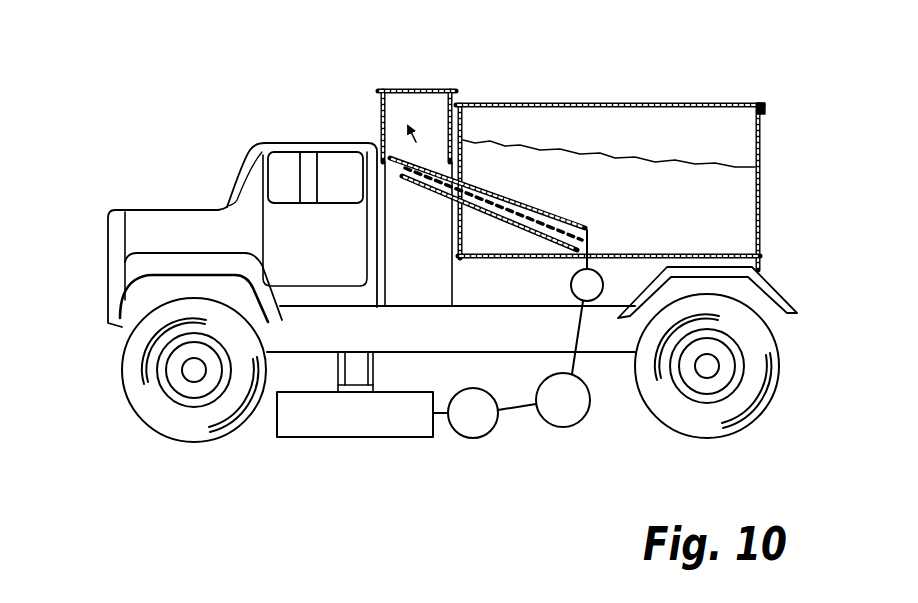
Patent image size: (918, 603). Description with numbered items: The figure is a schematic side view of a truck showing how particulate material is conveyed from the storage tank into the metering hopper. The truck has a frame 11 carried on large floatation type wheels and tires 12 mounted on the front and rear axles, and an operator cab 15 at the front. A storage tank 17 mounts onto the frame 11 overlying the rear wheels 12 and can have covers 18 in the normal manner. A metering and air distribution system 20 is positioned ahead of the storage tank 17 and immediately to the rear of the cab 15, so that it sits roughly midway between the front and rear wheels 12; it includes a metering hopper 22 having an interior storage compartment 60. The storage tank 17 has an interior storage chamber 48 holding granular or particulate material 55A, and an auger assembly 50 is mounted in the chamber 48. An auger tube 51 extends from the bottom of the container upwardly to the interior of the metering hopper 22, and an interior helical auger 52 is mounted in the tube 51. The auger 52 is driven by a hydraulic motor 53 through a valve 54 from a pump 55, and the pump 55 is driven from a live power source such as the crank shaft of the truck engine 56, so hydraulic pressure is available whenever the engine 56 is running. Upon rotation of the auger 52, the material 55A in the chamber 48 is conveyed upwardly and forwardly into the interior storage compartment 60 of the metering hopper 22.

The frame 11 is at (398, 330).
The wheels and tires 12 is at (147, 407).
The operator cab 15 is at (302, 143).
The storage tank 17 is at (727, 120).
The covers 18 is at (560, 105).
The metering and air distribution system 20 is at (406, 78).
The metering hopper 22 is at (455, 104).
The interior storage chamber 48 is at (603, 133).
The auger assembly 50 is at (508, 182).
The auger tube 51 is at (527, 198).
The helical auger 52 is at (587, 233).
The hydraulic motor 53 is at (570, 284).
The valve 54 is at (578, 424).
The pump 55 is at (461, 437).
The granular or particulate material 55A is at (722, 200).
The engine 56 is at (287, 438).
The interior storage compartment 60 is at (421, 102).